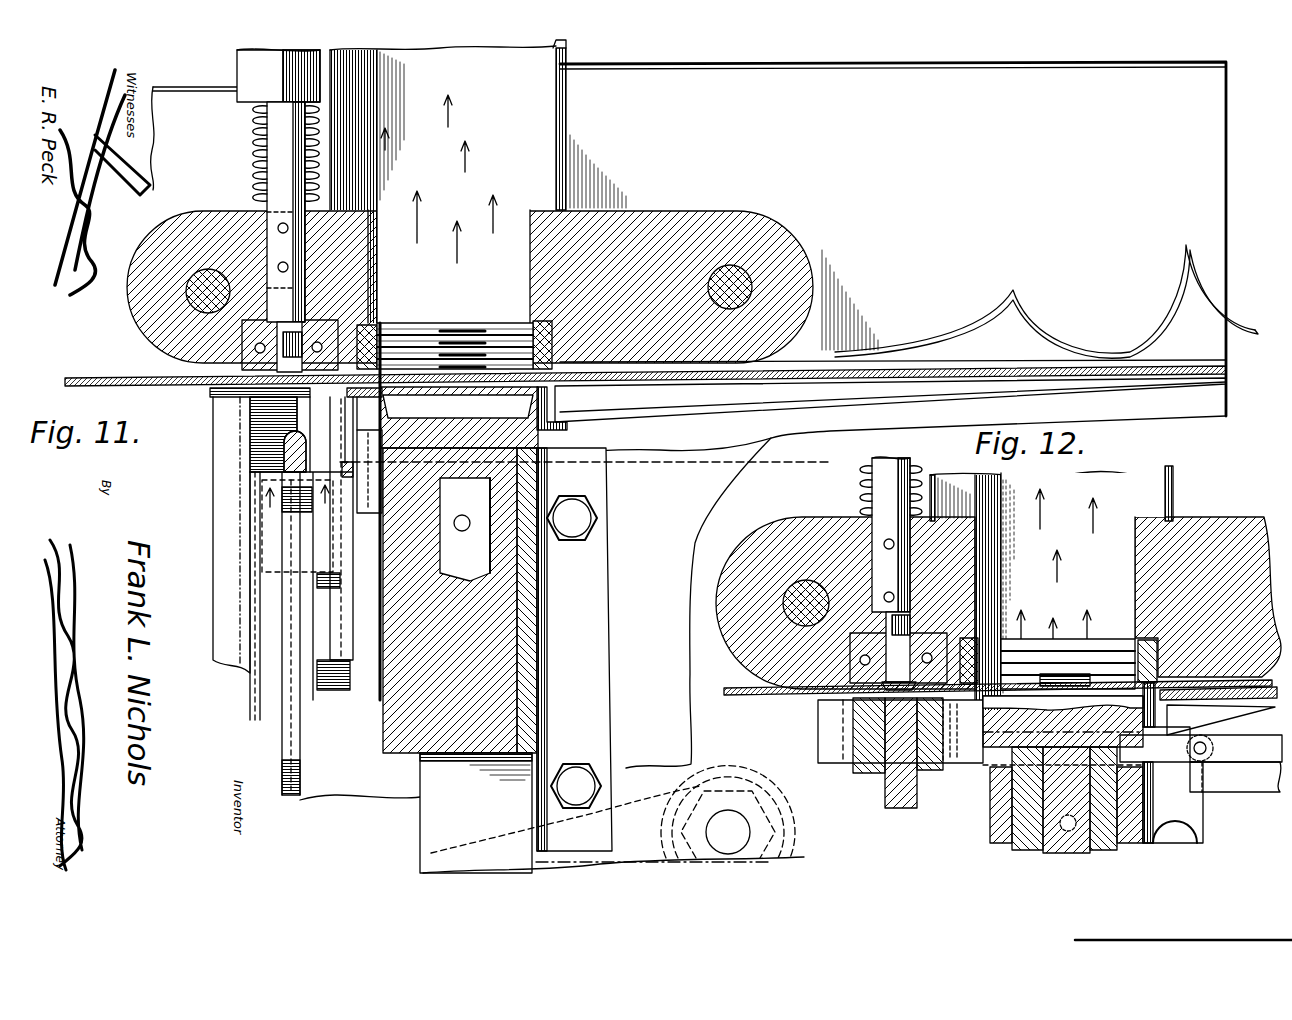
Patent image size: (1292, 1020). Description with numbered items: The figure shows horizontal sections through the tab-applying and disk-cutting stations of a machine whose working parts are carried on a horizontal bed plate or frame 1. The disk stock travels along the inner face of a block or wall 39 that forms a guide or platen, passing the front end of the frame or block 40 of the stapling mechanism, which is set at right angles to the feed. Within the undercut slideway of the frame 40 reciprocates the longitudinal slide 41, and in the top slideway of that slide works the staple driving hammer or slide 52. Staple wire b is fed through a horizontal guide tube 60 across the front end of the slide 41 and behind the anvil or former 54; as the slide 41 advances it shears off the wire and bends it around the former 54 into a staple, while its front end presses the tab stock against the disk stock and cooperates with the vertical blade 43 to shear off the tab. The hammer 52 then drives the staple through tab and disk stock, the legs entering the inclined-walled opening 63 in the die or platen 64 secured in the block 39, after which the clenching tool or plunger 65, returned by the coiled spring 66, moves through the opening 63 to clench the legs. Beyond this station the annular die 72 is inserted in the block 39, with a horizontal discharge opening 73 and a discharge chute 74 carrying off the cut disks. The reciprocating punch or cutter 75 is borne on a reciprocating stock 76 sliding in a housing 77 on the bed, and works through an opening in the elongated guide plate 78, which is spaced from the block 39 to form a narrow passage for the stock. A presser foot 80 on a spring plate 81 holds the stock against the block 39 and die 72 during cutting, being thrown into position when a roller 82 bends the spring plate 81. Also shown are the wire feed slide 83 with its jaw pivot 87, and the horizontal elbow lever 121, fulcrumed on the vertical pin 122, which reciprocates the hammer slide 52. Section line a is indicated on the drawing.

In FIG. 11, the bed plate or frame 1 is at (866, 76).
In FIG. 12, the bed plate or frame 1 is at (718, 542).
In FIG. 11, the block or wall 39 is at (184, 226).
In FIG. 12, the block or wall 39 is at (770, 546).
In FIG. 11, the frame or block of the stapling mechanism 40 is at (222, 453).
In FIG. 12, the frame or block of the stapling mechanism 40 is at (826, 750).
In FIG. 11, the longitudinal slide 41 is at (262, 690).
In FIG. 12, the longitudinal slide 41 is at (938, 772).
In FIG. 11, the vertical blade 43 is at (308, 437).
In FIG. 11, the staple driving hammer or slide 52 is at (297, 605).
In FIG. 12, the staple driving hammer or slide 52 is at (887, 783).
In FIG. 11, the anvil or former 54 is at (262, 457).
In FIG. 11, the horizontal guide tube 60 is at (345, 463).
In FIG. 11, the horizontal aperture or opening 63 is at (250, 398).
In FIG. 12, the horizontal aperture or opening 63 is at (872, 686).
In FIG. 11, the die or platen 64 is at (200, 390).
In FIG. 12, the die or platen 64 is at (815, 693).
In FIG. 11, the clenching tool or plunger 65 is at (290, 303).
In FIG. 12, the clenching tool or plunger 65 is at (893, 624).
In FIG. 11, the coiled spring 66 is at (257, 146).
In FIG. 12, the coiled spring 66 is at (912, 465).
In FIG. 11, the female ring or annular die 72 is at (542, 317).
In FIG. 12, the female ring or annular die 72 is at (992, 680).
In FIG. 11, the horizontal discharge opening 73 is at (443, 184).
In FIG. 12, the horizontal discharge opening 73 is at (1047, 591).
In FIG. 11, the disk discharge pipe or chute 74 is at (574, 146).
In FIG. 12, the disk discharge pipe or chute 74 is at (1162, 490).
In FIG. 11, the reciprocating punch or cutter 75 is at (535, 404).
In FIG. 12, the reciprocating punch or cutter 75 is at (1063, 724).
In FIG. 11, the reciprocating stock 76 is at (445, 682).
In FIG. 12, the reciprocating stock 76 is at (1012, 800).
In FIG. 11, the slideway or housing 77 is at (542, 652).
In FIG. 12, the slideway or housing 77 is at (1173, 802).
In FIG. 11, the elongated guide plate 78 is at (652, 392).
In FIG. 12, the elongated guide plate 78 is at (1218, 705).
In FIG. 11, the presser foot 80 is at (568, 398).
In FIG. 12, the presser foot 80 is at (1147, 695).
In FIG. 11, the spring plate 81 is at (726, 402).
In FIG. 12, the roller 82 is at (1221, 721).
In FIG. 12, the reciprocating slide 83 is at (1250, 792).
In FIG. 12, the pivot 87 is at (1234, 748).
In FIG. 11, the horizontal elbow lever 121 is at (457, 852).
In FIG. 11, the vertical pin 122 is at (728, 812).
In FIG. 11, the section line a is at (106, 372).
In FIG. 12, the section line a is at (742, 677).
In FIG. 11, the wire b is at (672, 468).